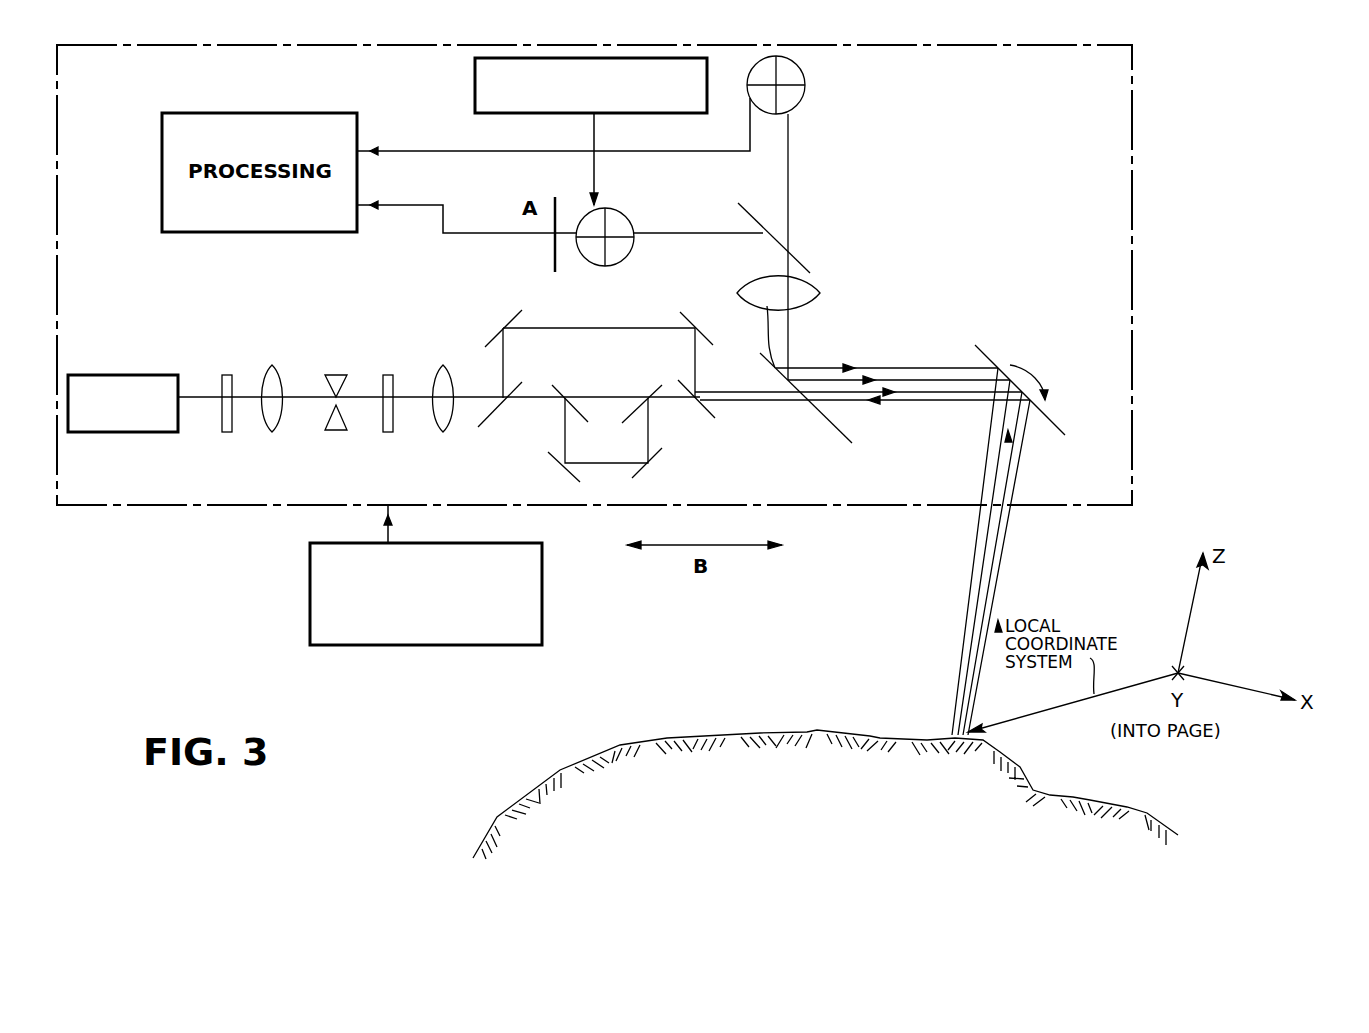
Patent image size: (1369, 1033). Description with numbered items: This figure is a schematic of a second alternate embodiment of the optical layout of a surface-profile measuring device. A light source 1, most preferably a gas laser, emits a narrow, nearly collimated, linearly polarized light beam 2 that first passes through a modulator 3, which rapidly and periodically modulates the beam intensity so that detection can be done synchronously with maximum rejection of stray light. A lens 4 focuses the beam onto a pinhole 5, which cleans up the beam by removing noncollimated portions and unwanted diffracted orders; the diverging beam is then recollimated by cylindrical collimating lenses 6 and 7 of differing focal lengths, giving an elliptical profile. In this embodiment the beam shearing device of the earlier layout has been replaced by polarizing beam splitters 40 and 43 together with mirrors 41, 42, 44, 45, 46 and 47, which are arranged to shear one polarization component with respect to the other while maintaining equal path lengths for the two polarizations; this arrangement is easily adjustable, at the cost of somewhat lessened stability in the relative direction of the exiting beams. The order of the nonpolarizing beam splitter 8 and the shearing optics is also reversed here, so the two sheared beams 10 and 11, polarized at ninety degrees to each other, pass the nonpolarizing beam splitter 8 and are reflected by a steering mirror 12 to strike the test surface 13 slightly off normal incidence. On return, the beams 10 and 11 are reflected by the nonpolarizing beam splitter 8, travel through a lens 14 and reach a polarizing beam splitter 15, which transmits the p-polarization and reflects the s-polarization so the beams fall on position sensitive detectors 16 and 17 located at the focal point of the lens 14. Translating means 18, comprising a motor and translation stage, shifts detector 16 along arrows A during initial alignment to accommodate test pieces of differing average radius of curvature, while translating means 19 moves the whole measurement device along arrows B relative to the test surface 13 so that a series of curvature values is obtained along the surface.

The light source 1 is at (122, 378).
The light beam 2 is at (205, 395).
The modulator 3 is at (226, 375).
The lens 4 is at (272, 365).
The pinhole 5 is at (334, 375).
The collimating lens 6 is at (389, 375).
The collimating lens 7 is at (443, 365).
The nonpolarizing beam splitter 8 is at (821, 415).
The beam 10 is at (905, 402).
The beam 11 is at (940, 402).
The steering mirror 12 is at (1052, 414).
The test surface 13 is at (955, 760).
The lens 14 is at (814, 296).
The polarizing beam splitter 15 is at (791, 244).
The position sensitive detector 16 is at (618, 222).
The position sensitive detector 17 is at (802, 94).
The translating means 18 is at (475, 75).
The translating means 19 is at (542, 617).
The polarizing beam splitter 40 is at (506, 408).
The mirror 41 is at (497, 326).
The mirror 42 is at (688, 318).
The polarizing beam splitter 43 is at (698, 410).
The mirror 44 is at (574, 396).
The mirror 45 is at (561, 466).
The mirror 46 is at (652, 462).
The mirror 47 is at (649, 398).